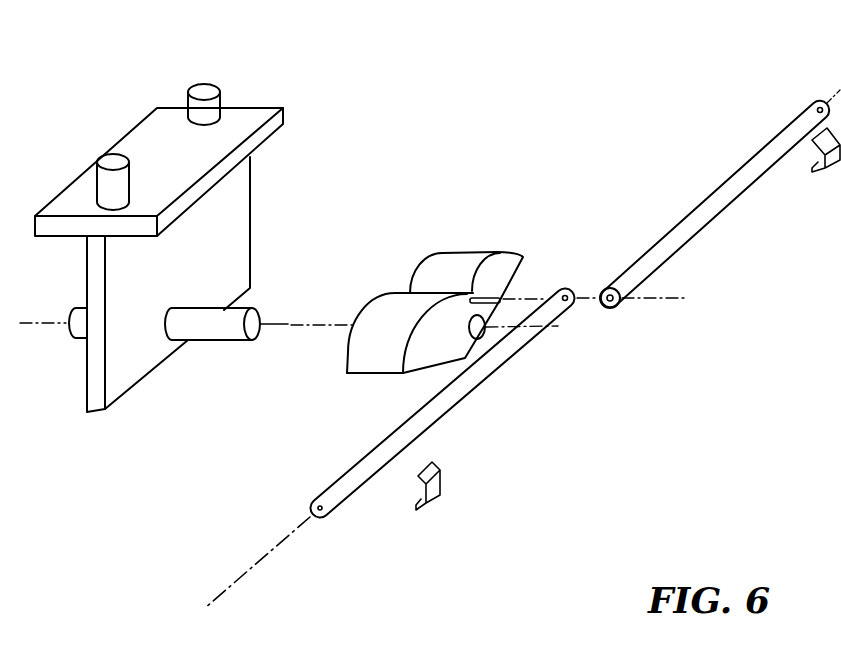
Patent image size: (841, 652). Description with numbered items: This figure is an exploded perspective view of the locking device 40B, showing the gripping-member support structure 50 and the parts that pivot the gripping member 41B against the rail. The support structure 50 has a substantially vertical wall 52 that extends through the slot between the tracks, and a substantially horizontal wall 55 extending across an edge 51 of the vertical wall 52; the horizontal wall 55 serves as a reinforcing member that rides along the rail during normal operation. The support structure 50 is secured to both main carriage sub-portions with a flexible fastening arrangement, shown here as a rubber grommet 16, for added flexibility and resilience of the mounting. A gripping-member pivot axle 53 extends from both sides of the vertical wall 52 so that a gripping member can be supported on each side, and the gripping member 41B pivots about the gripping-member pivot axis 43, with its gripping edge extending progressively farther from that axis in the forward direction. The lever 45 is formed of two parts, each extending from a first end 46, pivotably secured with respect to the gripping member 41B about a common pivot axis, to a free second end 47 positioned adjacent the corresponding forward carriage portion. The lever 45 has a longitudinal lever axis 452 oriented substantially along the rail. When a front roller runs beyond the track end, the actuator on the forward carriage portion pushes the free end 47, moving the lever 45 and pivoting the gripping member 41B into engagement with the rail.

The locking device 40B is at (509, 96).
The rubber grommet 16 is at (210, 110).
The gripping-member support structure 50 is at (235, 208).
The horizontal wall 55 is at (150, 140).
The edge of vertical wall 51 is at (90, 245).
The vertical wall 52 is at (230, 245).
The gripping-member pivot axle 53 is at (215, 325).
The gripping-member pivot axis 43 is at (283, 323).
The gripping member 41B is at (358, 353).
The lever 45 is at (465, 387).
The first end of lever 46 is at (612, 290).
The free second end of lever 47 is at (817, 110).
The longitudinal lever axis 452 is at (222, 593).